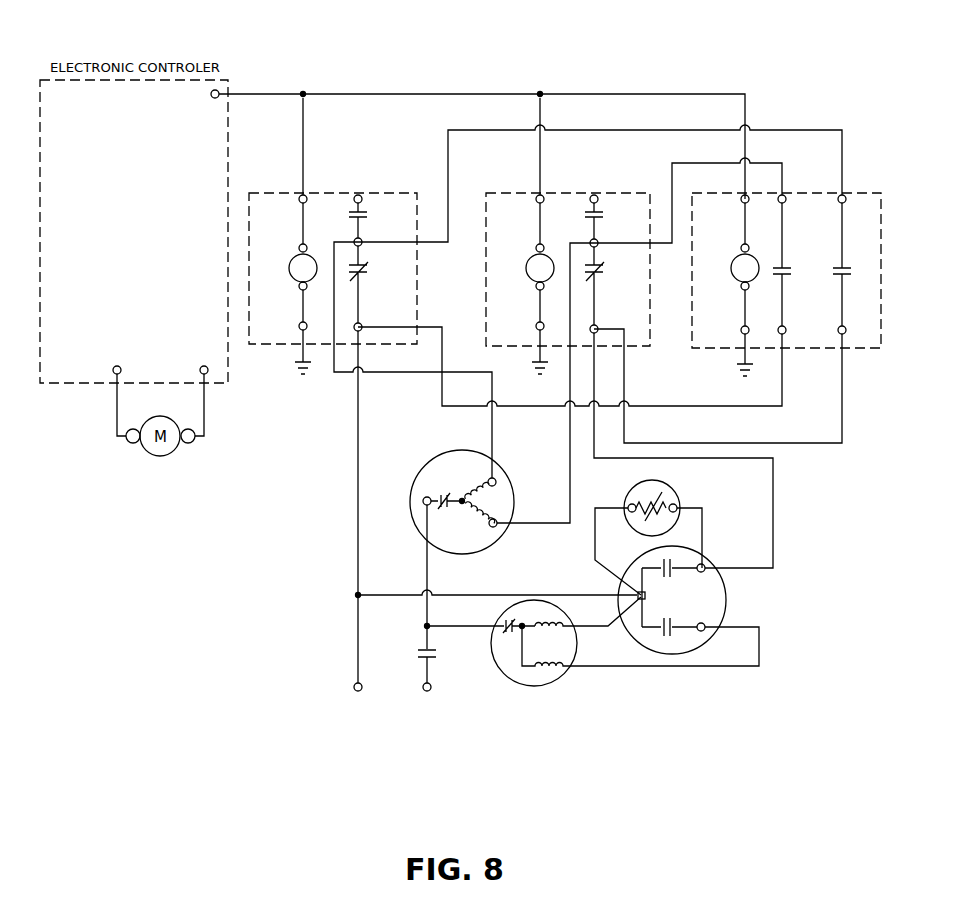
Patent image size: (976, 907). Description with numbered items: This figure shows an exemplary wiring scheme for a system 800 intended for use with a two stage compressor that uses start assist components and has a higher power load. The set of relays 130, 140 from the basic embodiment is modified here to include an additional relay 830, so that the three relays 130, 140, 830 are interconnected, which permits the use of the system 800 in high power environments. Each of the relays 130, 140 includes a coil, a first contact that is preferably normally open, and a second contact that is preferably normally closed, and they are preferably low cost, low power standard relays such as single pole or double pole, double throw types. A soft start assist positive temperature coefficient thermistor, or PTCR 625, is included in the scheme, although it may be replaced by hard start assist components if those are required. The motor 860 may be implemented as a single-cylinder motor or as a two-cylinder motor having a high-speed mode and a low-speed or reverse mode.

The system 800 is at (757, 803).
The relay 140 is at (348, 190).
The relay 130 is at (583, 190).
The additional relay (R3) 830 is at (805, 190).
The motor 860 is at (424, 470).
The soft start assist positive temperature coefficient thermistor (PTCR) 625 is at (678, 485).